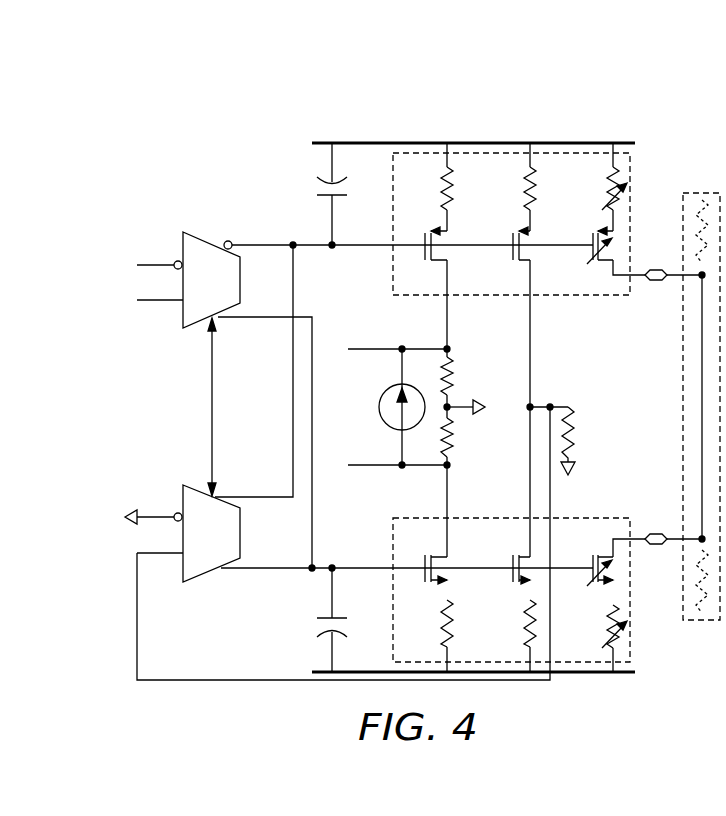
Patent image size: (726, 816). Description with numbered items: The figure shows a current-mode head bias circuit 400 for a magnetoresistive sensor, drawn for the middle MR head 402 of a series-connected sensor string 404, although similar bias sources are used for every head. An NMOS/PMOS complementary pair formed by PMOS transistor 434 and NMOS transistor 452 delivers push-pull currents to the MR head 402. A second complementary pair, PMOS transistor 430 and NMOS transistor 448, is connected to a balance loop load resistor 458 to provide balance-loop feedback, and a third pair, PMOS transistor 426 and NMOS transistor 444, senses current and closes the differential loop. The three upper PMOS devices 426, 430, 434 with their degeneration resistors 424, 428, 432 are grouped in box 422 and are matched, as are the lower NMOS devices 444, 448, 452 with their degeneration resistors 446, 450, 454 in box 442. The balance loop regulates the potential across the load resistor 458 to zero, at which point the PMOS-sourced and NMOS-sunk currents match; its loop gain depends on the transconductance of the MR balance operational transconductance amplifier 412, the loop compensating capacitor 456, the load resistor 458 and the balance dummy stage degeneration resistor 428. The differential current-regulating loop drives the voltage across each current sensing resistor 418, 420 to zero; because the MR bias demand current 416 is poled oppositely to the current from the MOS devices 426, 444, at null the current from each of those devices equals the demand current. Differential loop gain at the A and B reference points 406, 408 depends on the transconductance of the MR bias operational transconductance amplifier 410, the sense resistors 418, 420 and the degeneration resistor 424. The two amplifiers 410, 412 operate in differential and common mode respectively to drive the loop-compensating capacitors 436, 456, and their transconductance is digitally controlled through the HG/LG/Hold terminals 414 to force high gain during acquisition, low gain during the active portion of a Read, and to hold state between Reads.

The current-mode head bias circuit 400 is at (636, 100).
The MR head 402 is at (688, 388).
The series-connected sensor string 404 is at (695, 193).
The A reference point 406 is at (150, 263).
The B reference point 408 is at (151, 302).
The MR bias operational transconductance amplifier 410 is at (232, 303).
The MR balance operational transconductance amplifier 412 is at (232, 558).
The HG/LG/Hold terminals 414 is at (165, 423).
The MR bias demand current 416 is at (381, 421).
The current sensing resistor 418 is at (453, 367).
The current sensing resistor 420 is at (453, 441).
The box of matched upper PMOS devices 422 is at (437, 184).
The degeneration resistor 424 is at (453, 173).
The PMOS transistor 426 is at (425, 261).
The balance dummy stage degeneration resistor 428 is at (527, 205).
The PMOS transistor 430 is at (513, 261).
The degeneration resistor 432 is at (611, 173).
The PMOS transistor 434 is at (593, 234).
The loop compensating capacitor 436 is at (339, 197).
The box of matched lower NMOS devices 442 is at (437, 657).
The NMOS transistor 444 is at (425, 556).
The degeneration resistor 446 is at (453, 613).
The NMOS transistor 448 is at (513, 556).
The degeneration resistor 450 is at (527, 644).
The NMOS transistor 452 is at (593, 556).
The degeneration resistor 454 is at (611, 613).
The loop compensating capacitor 456 is at (341, 618).
The balance loop load resistor 458 is at (572, 455).